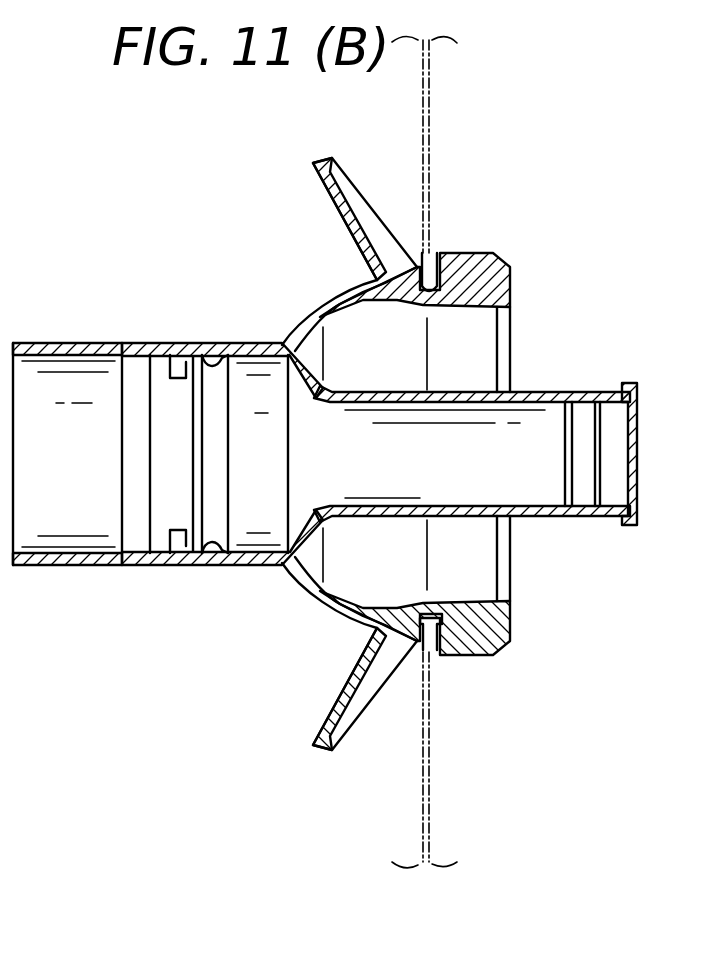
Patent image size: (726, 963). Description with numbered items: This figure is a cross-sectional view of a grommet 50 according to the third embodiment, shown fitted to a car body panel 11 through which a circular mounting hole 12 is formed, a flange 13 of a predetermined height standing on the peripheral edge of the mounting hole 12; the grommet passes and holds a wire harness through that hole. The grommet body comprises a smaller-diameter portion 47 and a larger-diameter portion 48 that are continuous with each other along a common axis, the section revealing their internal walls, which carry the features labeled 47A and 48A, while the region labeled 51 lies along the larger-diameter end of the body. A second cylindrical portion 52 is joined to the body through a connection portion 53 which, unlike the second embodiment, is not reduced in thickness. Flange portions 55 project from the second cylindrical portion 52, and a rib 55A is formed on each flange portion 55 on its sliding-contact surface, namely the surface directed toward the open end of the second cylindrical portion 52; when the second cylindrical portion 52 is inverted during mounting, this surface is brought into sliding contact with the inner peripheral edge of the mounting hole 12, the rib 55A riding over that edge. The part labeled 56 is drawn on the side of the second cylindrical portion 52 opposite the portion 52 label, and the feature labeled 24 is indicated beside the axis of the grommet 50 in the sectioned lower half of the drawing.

The car body panel 11 is at (430, 98).
The mounting hole 12 is at (420, 310).
The flange 13 is at (437, 250).
The lower pin 24 is at (437, 648).
The smaller-diameter portion 47 is at (570, 520).
The partitions 47A is at (603, 470).
The larger-diameter portion 48 is at (38, 563).
The internal ribs 48A is at (207, 515).
The grommet 50 is at (636, 173).
The connector body 51 is at (183, 563).
The second cylindrical portion 52 is at (493, 251).
The connection portion 53 is at (318, 313).
The flange portion 55 is at (312, 165).
The rib 55A is at (378, 220).
The lower flange 56 is at (508, 643).